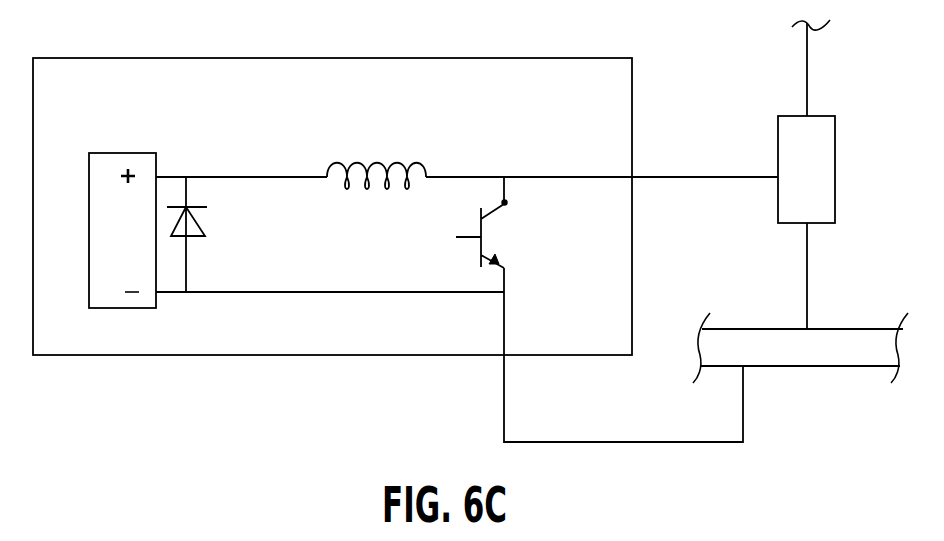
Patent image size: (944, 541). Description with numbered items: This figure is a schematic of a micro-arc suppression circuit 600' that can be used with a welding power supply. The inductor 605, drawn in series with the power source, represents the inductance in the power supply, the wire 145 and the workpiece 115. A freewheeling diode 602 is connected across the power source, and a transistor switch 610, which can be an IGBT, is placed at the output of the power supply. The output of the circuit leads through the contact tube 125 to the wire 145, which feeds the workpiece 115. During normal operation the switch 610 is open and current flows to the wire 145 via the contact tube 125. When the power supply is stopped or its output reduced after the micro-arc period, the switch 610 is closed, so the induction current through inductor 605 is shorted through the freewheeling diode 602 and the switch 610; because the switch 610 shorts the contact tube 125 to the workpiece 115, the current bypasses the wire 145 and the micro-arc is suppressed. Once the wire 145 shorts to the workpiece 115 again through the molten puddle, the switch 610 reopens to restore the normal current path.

The suppression circuit 600' is at (405, 250).
The inductor 605 is at (375, 164).
The freewheeling diode 602 is at (203, 222).
The transistor switch 610 is at (493, 234).
The wire 145 is at (807, 69).
The contact tube 125 is at (835, 152).
The workpiece 115 is at (820, 366).